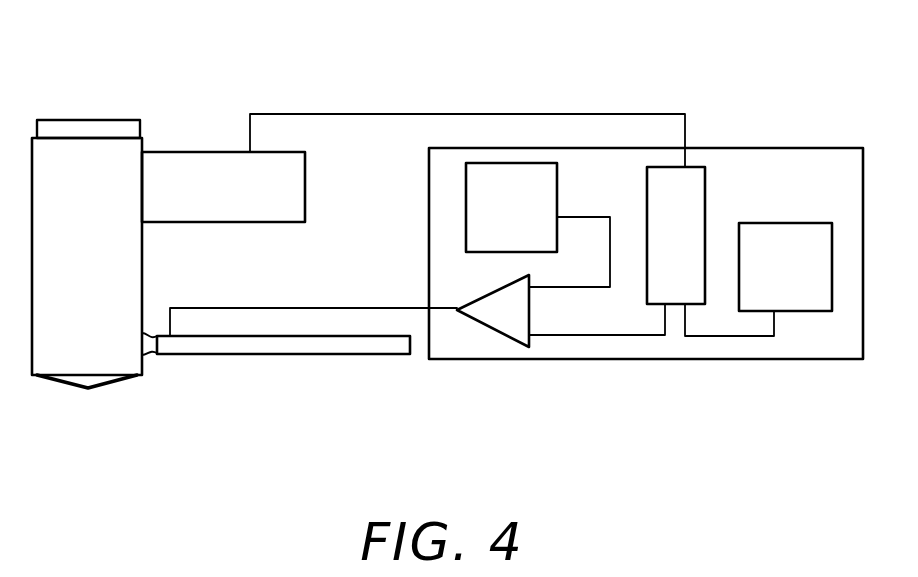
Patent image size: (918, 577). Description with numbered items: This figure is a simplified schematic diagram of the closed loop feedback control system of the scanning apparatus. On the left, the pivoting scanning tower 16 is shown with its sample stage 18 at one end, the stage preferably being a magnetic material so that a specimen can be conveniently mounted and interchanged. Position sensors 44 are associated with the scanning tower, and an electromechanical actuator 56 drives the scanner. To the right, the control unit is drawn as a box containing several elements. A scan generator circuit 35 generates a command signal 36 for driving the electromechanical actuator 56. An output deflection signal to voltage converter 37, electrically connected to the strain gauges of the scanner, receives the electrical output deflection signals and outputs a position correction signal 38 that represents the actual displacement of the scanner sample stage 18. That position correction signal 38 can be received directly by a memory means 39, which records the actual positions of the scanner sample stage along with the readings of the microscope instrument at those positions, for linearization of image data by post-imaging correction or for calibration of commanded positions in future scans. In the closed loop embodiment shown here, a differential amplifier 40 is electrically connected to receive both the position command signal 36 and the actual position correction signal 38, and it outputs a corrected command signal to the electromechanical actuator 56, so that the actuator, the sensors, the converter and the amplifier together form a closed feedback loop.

The pivoting scanning tower 16 is at (142, 253).
The sample stage 18 is at (108, 120).
The position sensors 44 is at (207, 152).
The electromechanical actuator 56 is at (272, 355).
The position correction signal 38 is at (588, 335).
The scan generator circuit 35 is at (528, 163).
The command signal 36 is at (585, 217).
The output deflection signal to voltage converter 37 is at (695, 167).
The memory means 39 is at (793, 223).
The differential amplifier 40 is at (490, 325).